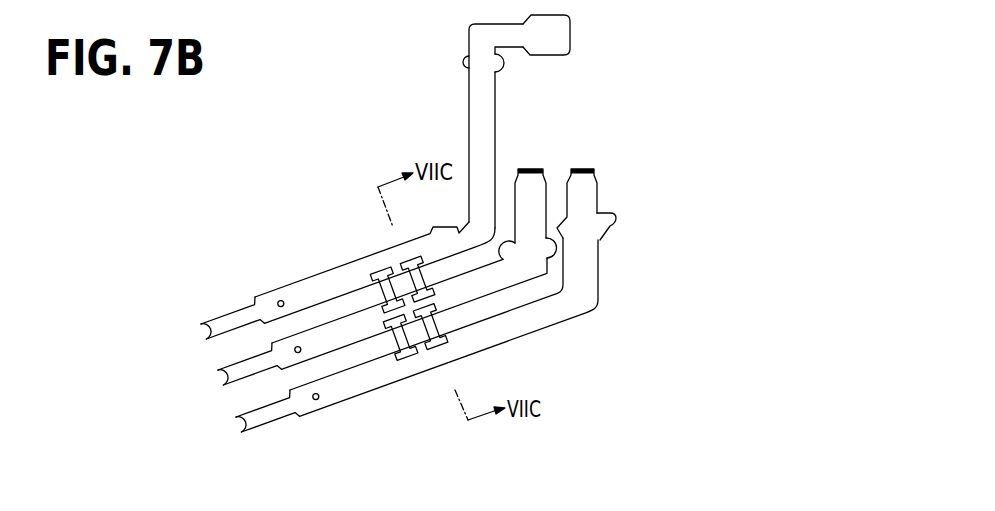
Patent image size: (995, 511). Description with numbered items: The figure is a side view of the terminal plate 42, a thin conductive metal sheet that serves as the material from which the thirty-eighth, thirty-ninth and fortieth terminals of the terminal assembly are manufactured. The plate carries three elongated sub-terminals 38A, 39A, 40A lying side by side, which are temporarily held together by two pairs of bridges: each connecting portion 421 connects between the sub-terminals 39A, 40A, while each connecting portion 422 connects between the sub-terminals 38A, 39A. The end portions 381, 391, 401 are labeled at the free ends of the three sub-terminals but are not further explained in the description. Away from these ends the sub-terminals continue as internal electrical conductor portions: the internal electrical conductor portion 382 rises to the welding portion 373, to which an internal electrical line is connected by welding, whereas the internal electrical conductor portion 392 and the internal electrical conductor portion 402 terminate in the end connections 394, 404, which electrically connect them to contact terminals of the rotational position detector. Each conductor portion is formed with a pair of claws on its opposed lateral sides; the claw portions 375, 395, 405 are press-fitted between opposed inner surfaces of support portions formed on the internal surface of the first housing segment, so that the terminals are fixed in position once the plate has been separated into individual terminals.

The terminal plate 42 is at (340, 203).
The welding portion 373 is at (566, 35).
The claw portions 375 is at (469, 60).
The internal electrical conductor portion 382 is at (478, 108).
The end connection 404 is at (532, 168).
The end connection 394 is at (588, 168).
The claw portions 395 is at (557, 226).
The claw portions 405 is at (560, 261).
The connecting portions 422 is at (367, 281).
The connecting portions 421 is at (420, 349).
The sub-terminal 38A is at (252, 299).
The lead end 381 is at (198, 334).
The sub-terminal 40A is at (277, 374).
The lead end 401 is at (215, 381).
The internal electrical conductor portion 402 is at (505, 286).
The sub-terminal 39A is at (293, 418).
The lead end 391 is at (231, 431).
The internal electrical conductor portion 392 is at (557, 320).